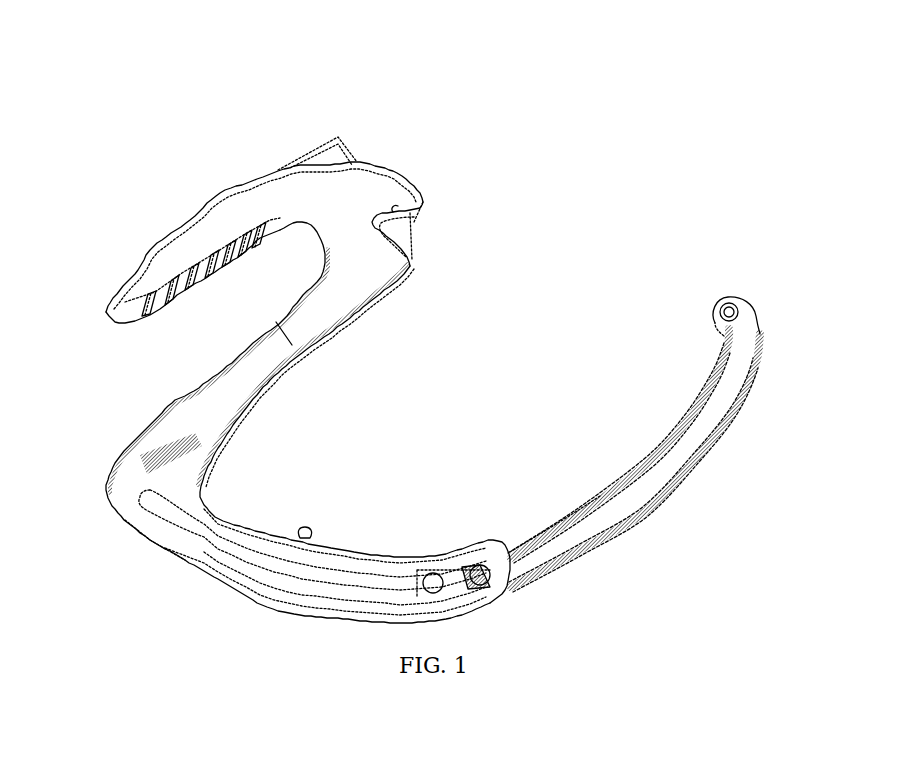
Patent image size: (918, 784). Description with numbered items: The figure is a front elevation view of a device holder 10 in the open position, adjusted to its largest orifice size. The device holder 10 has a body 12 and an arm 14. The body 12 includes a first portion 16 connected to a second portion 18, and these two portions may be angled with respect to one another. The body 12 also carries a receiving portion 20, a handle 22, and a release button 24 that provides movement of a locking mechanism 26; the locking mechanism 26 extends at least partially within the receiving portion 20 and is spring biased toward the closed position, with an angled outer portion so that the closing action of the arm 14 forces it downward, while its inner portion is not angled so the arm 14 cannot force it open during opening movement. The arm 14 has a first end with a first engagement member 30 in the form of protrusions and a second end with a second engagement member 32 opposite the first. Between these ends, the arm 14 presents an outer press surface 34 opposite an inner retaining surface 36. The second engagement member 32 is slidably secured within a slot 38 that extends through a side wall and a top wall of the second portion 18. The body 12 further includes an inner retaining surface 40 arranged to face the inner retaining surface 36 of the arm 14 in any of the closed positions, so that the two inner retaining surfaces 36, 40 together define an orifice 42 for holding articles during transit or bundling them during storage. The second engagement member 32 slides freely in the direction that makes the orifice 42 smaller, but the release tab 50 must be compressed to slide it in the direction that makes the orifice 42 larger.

The device holder 10 is at (608, 207).
The body 12 is at (255, 404).
The arm 14 is at (642, 531).
The first portion 16 is at (168, 405).
The second portion 18 is at (178, 560).
The receiving portion 20 is at (394, 212).
The handle 22 is at (197, 227).
The release button 24 is at (327, 150).
The locking mechanism 26 is at (420, 227).
The first engagement member 30 is at (730, 305).
The second engagement member 32 is at (481, 573).
The outer press surface 34 is at (712, 452).
The inner retaining surface 36 is at (688, 420).
The slot 38 is at (152, 512).
The inner retaining surface 40 is at (322, 341).
The orifice 42 is at (303, 538).
The release tab 50 is at (433, 583).